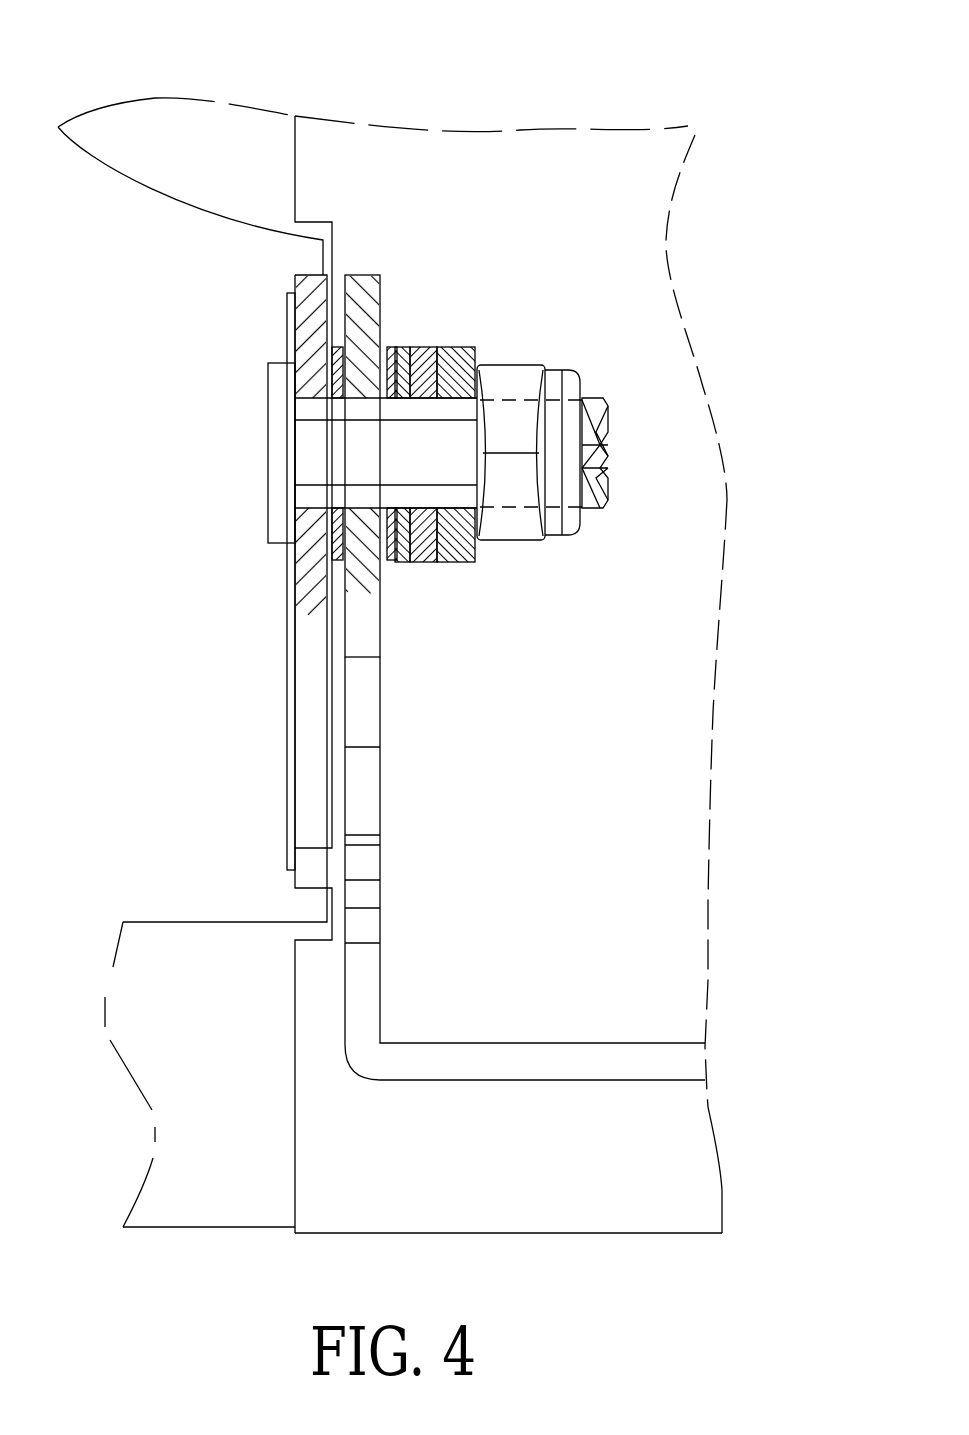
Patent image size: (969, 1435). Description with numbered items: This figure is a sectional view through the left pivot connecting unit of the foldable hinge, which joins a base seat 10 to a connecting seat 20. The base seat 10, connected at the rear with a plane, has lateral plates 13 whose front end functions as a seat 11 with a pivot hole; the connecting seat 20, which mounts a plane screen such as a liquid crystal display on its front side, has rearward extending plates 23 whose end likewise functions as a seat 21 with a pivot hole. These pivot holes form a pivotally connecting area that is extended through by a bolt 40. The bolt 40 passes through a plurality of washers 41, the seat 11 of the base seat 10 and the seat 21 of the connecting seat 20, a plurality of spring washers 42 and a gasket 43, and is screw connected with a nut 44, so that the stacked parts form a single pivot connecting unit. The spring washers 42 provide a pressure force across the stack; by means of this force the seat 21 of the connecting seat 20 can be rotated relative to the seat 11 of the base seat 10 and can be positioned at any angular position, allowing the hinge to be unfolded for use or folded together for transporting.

The base seat 10 is at (600, 1047).
The seat 11 is at (370, 277).
The lateral plate 13 is at (362, 797).
The connecting seat 20 is at (419, 133).
The seat 21 is at (300, 278).
The rearward extending plate 23 is at (310, 733).
The bolt 40 is at (280, 465).
The washers 41 is at (340, 560).
The spring washers 42 is at (428, 346).
The gasket 43 is at (477, 346).
The nut 44 is at (523, 377).